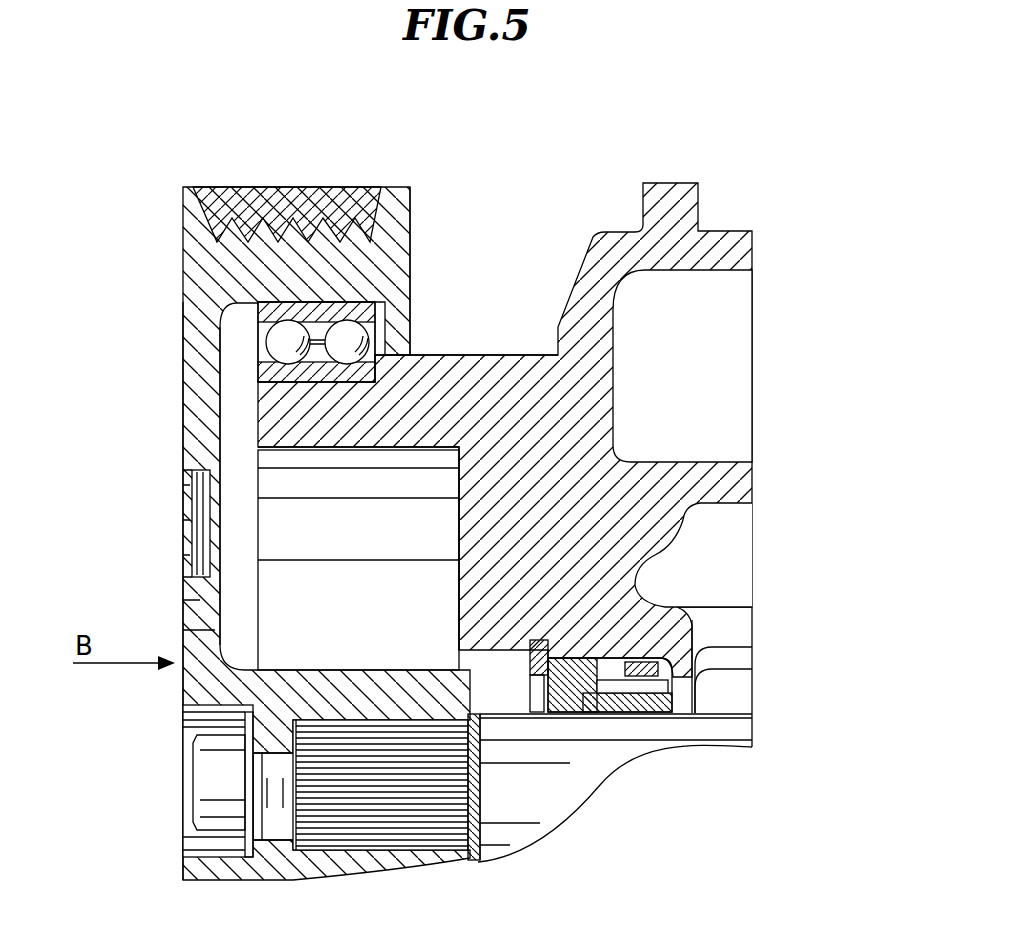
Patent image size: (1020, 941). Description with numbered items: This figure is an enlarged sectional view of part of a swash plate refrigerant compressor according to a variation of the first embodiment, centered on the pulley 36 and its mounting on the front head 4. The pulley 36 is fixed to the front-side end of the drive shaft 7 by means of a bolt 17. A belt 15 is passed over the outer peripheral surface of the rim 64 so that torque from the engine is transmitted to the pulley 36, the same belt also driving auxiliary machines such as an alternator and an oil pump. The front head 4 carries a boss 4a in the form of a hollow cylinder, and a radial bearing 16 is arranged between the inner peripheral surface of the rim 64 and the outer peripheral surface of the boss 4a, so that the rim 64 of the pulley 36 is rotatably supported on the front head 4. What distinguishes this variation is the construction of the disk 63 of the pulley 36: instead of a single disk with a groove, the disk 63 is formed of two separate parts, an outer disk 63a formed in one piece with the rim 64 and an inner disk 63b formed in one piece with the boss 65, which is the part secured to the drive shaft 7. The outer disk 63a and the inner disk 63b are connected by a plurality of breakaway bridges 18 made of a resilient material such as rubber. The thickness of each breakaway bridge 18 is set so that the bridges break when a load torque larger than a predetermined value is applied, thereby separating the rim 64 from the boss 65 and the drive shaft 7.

The pulley 36 is at (168, 192).
The belt 15 is at (288, 190).
The rim 64 is at (408, 240).
The front head 4 is at (733, 230).
The boss 4a is at (448, 372).
The radial bearing 16 is at (272, 330).
The disk 63 is at (192, 397).
The outer disk 63a is at (192, 452).
The breakaway bridge 18 is at (196, 524).
The inner disk 63b is at (192, 597).
The boss 65 is at (360, 690).
The bolt 17 is at (205, 777).
The drive shaft 7 is at (568, 757).